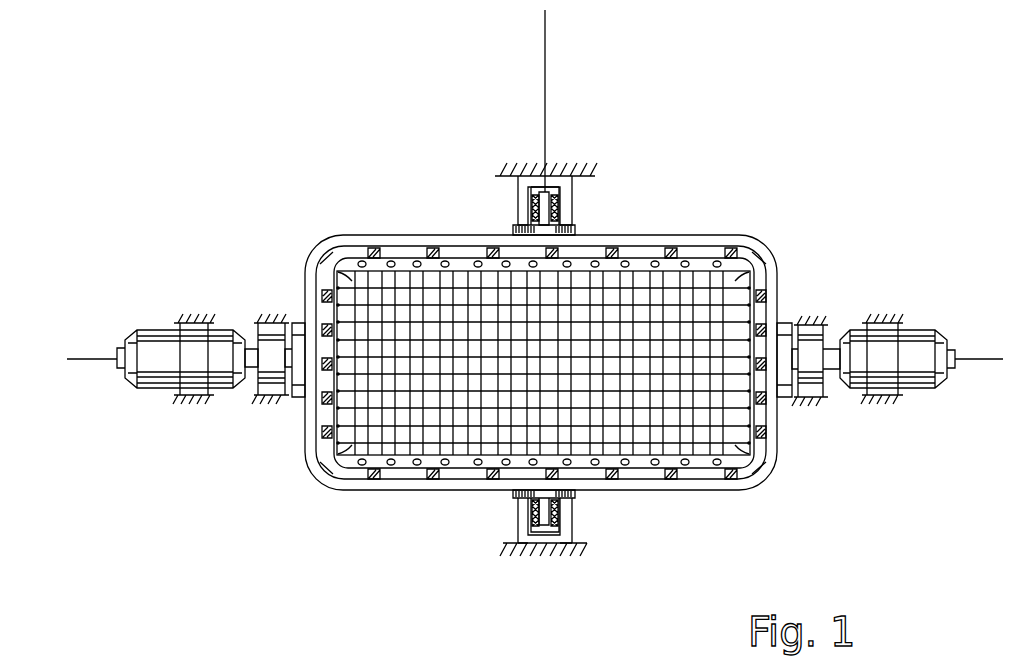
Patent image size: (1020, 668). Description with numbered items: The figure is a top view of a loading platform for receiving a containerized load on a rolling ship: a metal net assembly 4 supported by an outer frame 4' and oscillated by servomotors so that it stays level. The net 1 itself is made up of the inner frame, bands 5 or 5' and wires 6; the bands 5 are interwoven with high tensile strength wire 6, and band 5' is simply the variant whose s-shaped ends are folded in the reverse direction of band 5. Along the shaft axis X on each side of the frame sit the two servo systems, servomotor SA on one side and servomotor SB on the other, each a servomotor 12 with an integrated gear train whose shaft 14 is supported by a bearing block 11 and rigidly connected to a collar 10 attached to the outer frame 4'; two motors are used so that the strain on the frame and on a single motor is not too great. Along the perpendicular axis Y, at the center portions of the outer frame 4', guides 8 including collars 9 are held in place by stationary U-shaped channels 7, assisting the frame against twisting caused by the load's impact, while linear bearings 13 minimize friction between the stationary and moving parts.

The net 1 is at (700, 462).
The net assembly 4 is at (539, 404).
The outer frame 4' is at (506, 407).
The band 5 is at (539, 330).
The band 5' is at (507, 326).
The high tensile strength wire 6 is at (378, 287).
The stationary U-shaped channel 7 is at (518, 205).
The guide 8 is at (545, 193).
The collar 9 is at (578, 232).
The collar 10 is at (302, 398).
The bearing block 11 is at (255, 382).
The servo motor 12 is at (847, 397).
The linear bearing 13 is at (555, 535).
The shaft 14 is at (255, 347).
The servomotor SA is at (157, 390).
The servomotor SB is at (920, 397).
The X axis X is at (535, 349).
The Y axis Y is at (532, 101).